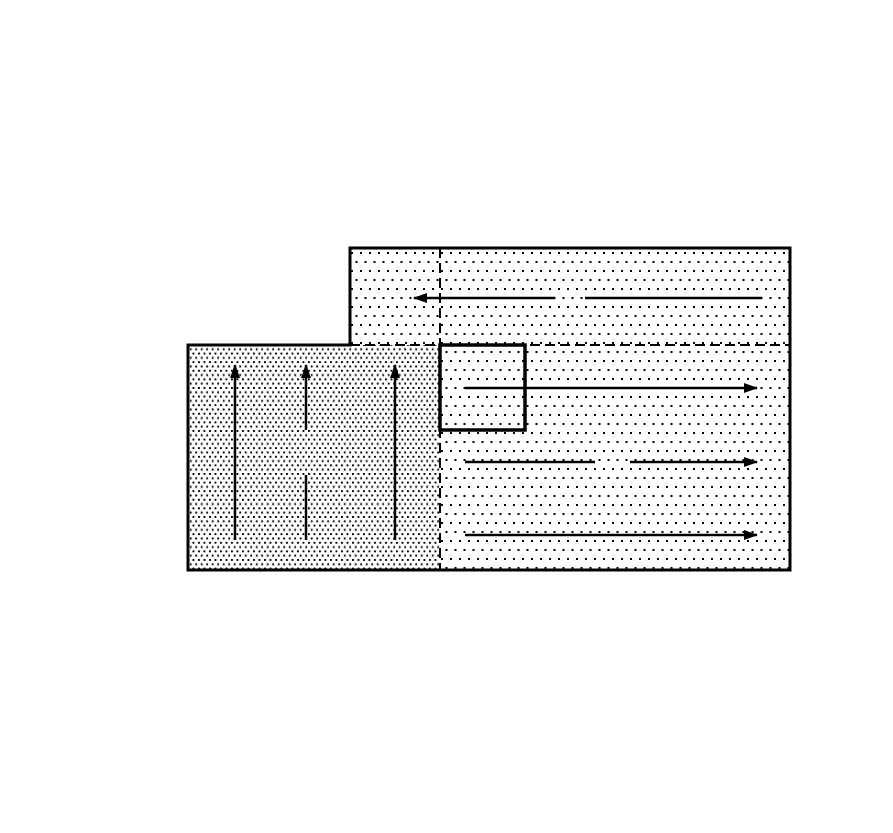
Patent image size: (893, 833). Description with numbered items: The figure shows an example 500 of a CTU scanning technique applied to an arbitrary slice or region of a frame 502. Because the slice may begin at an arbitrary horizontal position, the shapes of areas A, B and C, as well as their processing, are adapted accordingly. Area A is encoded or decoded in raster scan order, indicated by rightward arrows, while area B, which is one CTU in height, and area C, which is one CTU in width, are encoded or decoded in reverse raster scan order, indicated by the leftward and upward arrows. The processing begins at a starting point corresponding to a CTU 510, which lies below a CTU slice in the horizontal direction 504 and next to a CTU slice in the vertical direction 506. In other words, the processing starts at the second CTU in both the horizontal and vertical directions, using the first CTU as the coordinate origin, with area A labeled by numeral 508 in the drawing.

The example of a CTU scanning technique 500 is at (377, 88).
The frame 502 is at (112, 212).
The horizontal direction 504 is at (183, 248).
The vertical direction 506 is at (437, 218).
The axial flow stream A 508 is at (613, 490).
The CTU 510 is at (527, 365).